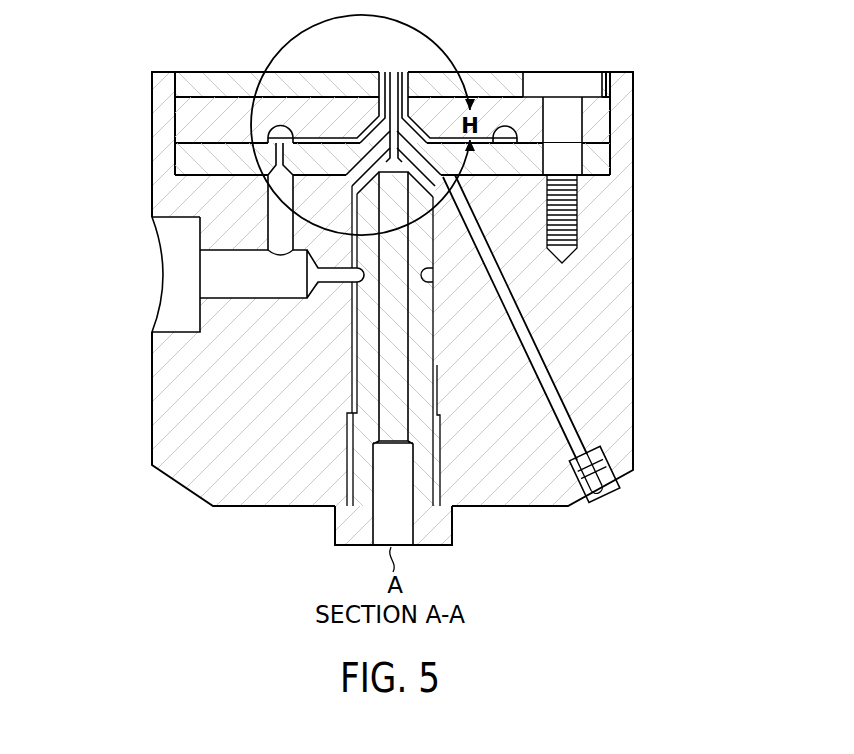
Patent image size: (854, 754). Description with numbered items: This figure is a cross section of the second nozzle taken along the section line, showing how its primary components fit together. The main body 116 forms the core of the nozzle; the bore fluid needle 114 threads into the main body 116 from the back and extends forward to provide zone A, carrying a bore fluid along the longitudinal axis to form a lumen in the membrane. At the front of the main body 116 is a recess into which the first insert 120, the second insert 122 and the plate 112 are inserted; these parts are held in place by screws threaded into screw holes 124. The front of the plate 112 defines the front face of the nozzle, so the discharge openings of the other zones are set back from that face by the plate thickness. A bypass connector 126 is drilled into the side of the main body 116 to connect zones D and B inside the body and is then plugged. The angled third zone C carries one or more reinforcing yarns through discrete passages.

The plate 112 is at (496, 72).
The screw holes 124 is at (570, 72).
The second insert 122 is at (594, 118).
The first insert 120 is at (594, 159).
The main body 116 is at (608, 297).
The bypass connector 126 is at (178, 283).
The bore fluid needle 114 is at (442, 527).
The third zone C is at (566, 414).